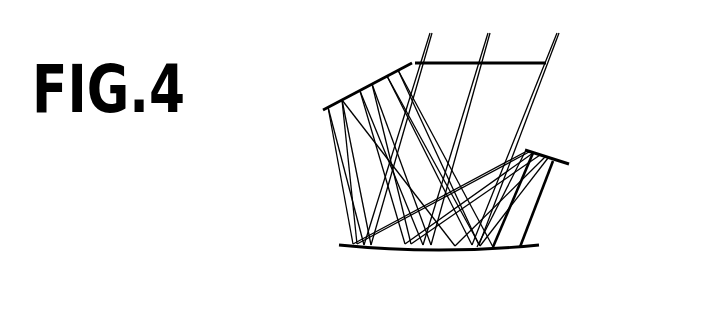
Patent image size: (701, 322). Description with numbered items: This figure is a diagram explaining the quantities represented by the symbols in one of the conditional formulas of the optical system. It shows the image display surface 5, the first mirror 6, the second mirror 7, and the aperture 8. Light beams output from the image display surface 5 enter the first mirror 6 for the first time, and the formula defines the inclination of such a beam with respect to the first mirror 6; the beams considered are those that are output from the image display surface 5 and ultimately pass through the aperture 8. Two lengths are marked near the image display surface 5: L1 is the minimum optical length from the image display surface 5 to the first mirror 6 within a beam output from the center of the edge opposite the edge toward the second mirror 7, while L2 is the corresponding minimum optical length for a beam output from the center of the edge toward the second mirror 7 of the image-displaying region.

The image display surface 5 is at (566, 162).
The first mirror 6 is at (386, 252).
The second mirror 7 is at (348, 97).
The aperture 8 is at (418, 62).
The minimum optical length from image display surface to first mirror (edge away fro L1 is at (543, 213).
The minimum optical length from image display surface to first mirror (edge toward s L2 is at (540, 184).